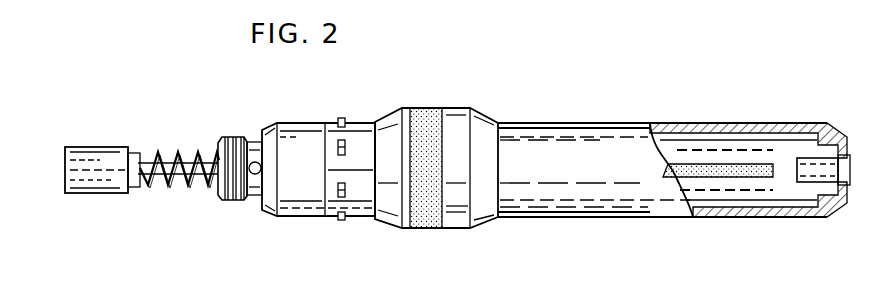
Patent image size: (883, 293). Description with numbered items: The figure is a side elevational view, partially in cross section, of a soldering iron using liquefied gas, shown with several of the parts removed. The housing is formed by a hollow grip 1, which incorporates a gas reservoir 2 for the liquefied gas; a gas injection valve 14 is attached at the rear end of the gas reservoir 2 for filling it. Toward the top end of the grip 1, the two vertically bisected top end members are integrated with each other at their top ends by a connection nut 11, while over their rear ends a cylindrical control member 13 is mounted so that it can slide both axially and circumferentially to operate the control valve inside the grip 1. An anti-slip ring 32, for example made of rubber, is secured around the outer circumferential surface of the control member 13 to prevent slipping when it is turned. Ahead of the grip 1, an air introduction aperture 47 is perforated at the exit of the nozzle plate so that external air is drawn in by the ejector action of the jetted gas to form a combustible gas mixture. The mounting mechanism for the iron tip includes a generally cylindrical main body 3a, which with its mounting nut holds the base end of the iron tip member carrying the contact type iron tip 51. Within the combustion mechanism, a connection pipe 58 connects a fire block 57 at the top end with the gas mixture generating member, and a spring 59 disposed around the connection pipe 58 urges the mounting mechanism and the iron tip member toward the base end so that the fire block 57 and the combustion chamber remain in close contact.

The grip 1 is at (623, 112).
The gas reservoir 2 is at (774, 208).
The main body 3a is at (237, 136).
The connection nut 11 is at (298, 128).
The control member 13 is at (458, 222).
The gas injection valve 14 is at (848, 164).
The anti-slip ring 32 is at (433, 113).
The air introduction aperture 47 is at (257, 182).
The contact type iron tip 51 is at (345, 198).
The fire block 57 is at (107, 144).
The connection pipe 58 is at (173, 148).
The spring 59 is at (175, 188).